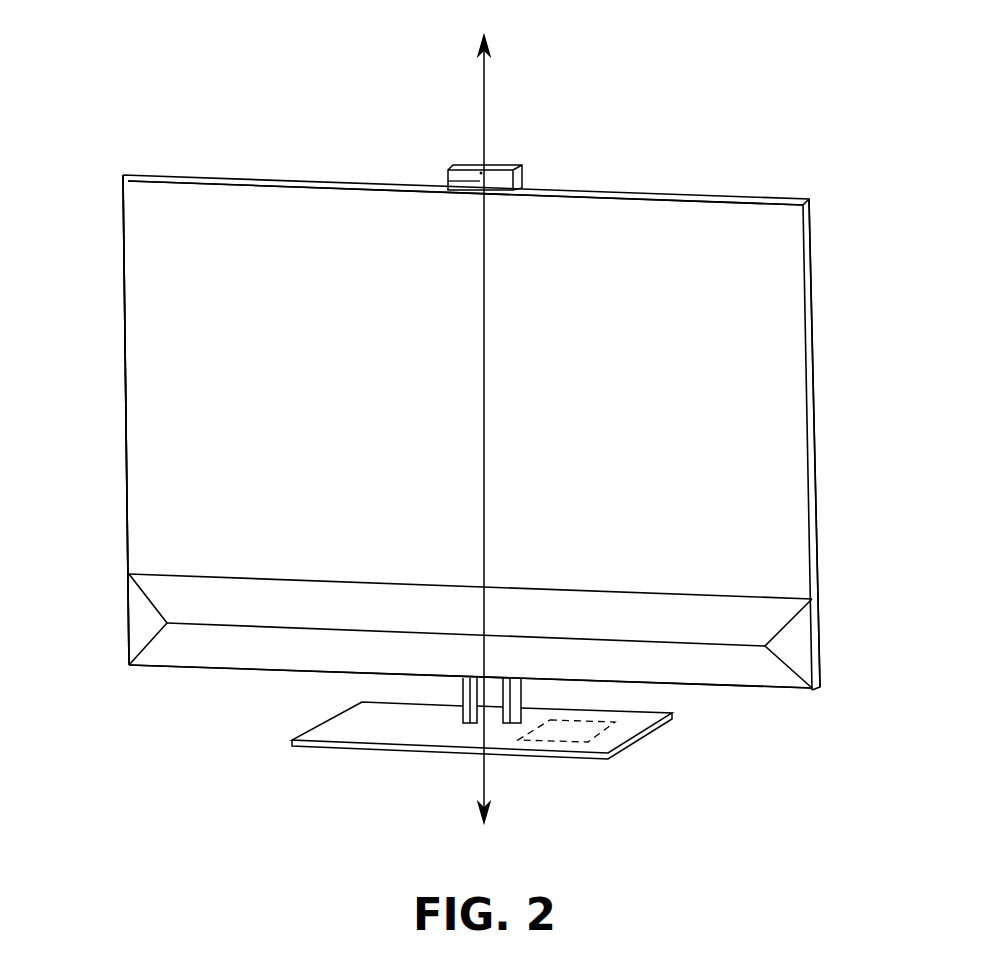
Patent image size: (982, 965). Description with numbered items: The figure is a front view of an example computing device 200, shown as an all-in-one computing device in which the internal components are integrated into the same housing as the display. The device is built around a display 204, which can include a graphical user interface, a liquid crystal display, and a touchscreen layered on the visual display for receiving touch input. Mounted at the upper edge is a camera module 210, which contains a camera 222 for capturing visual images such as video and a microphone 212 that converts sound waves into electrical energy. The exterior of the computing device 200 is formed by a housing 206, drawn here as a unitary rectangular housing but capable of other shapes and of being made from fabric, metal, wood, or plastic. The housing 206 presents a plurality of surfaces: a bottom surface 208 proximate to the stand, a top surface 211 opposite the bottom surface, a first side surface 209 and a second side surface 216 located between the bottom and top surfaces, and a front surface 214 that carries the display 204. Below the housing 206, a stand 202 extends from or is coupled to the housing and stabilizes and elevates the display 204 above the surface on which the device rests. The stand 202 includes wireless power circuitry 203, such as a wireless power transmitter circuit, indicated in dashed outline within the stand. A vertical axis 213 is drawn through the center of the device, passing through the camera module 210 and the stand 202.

The computing device 200 is at (228, 117).
The stand 202 is at (617, 754).
The wireless power circuitry 203 is at (557, 745).
The display 204 is at (385, 416).
The housing 206 is at (612, 192).
The bottom surface 208 is at (757, 690).
The first side surface 209 is at (124, 262).
The camera module 210 is at (505, 166).
The top surface 211 is at (722, 197).
The microphone 212 is at (481, 172).
The vertical axis 213 is at (485, 414).
The front surface 214 is at (154, 352).
The second side surface 216 is at (812, 283).
The camera 222 is at (480, 185).